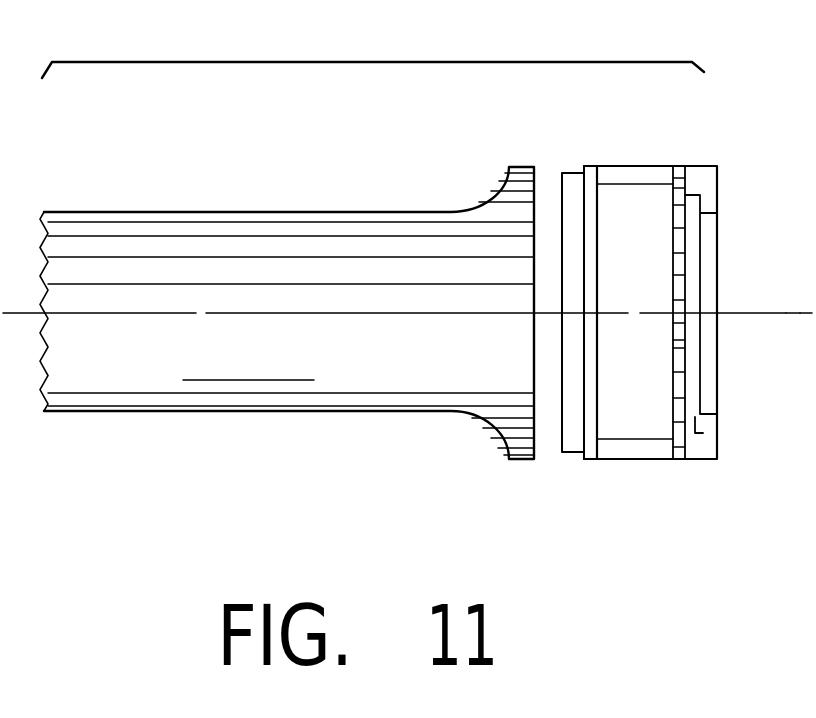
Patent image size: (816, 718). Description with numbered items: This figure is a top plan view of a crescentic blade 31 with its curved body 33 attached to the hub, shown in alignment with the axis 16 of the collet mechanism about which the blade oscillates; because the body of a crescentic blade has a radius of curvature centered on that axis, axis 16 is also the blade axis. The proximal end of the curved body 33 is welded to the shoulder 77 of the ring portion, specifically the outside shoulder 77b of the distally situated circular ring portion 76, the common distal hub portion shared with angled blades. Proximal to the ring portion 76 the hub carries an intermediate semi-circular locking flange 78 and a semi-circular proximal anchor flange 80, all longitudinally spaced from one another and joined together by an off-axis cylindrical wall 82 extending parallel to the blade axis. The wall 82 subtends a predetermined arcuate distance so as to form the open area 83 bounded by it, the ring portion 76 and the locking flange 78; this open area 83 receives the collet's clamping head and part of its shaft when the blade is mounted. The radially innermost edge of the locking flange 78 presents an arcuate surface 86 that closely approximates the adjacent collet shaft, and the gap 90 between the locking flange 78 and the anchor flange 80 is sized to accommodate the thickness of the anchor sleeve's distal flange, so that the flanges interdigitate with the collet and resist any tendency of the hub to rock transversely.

The crescentic blade 31 is at (389, 62).
The curved body 33 is at (210, 372).
The ring portion 76 is at (590, 452).
The plate 77 is at (532, 337).
The outside shoulder 77b is at (583, 458).
The off-axis cylindrical wall 82 is at (642, 461).
The open area 83 is at (651, 288).
The intermediate semi-circular locking flange 78 is at (678, 187).
The semi-circular proximal anchor flange 80 is at (708, 417).
The gap 90 is at (696, 432).
The arcuate surface 86 is at (680, 350).
The axis 16 is at (776, 311).